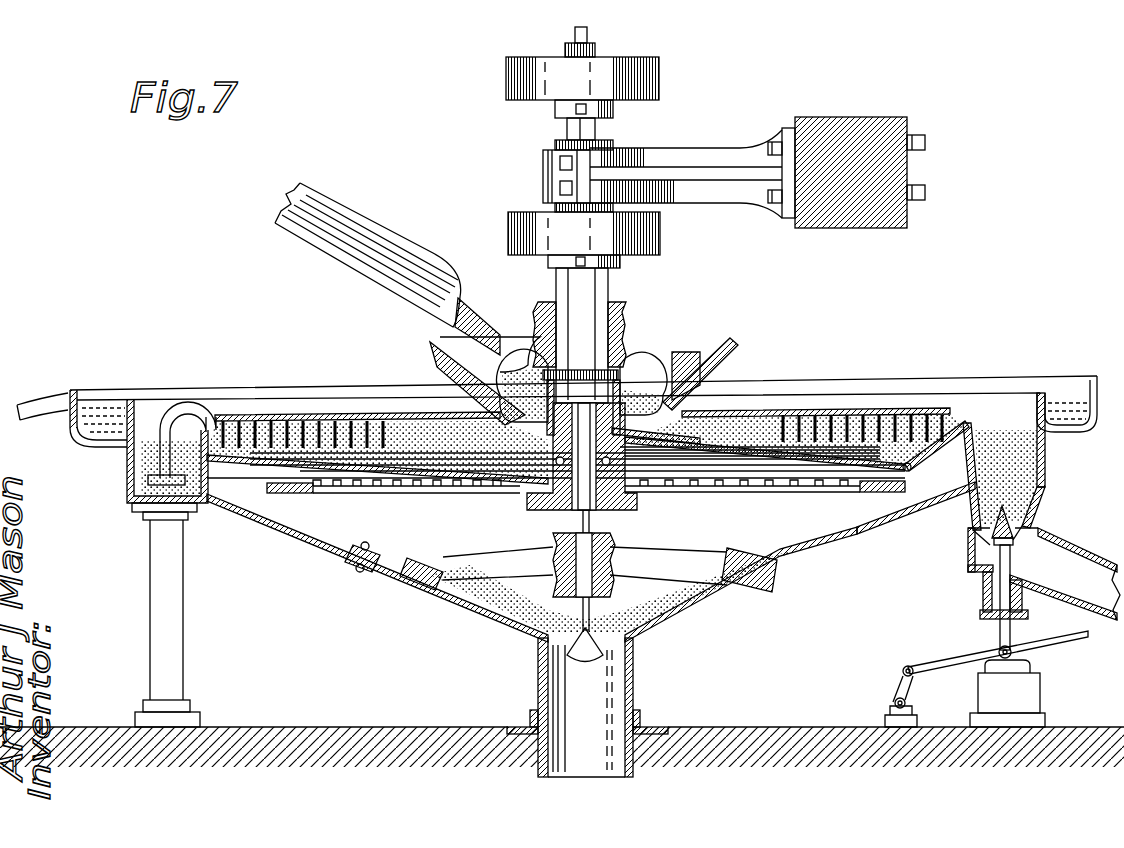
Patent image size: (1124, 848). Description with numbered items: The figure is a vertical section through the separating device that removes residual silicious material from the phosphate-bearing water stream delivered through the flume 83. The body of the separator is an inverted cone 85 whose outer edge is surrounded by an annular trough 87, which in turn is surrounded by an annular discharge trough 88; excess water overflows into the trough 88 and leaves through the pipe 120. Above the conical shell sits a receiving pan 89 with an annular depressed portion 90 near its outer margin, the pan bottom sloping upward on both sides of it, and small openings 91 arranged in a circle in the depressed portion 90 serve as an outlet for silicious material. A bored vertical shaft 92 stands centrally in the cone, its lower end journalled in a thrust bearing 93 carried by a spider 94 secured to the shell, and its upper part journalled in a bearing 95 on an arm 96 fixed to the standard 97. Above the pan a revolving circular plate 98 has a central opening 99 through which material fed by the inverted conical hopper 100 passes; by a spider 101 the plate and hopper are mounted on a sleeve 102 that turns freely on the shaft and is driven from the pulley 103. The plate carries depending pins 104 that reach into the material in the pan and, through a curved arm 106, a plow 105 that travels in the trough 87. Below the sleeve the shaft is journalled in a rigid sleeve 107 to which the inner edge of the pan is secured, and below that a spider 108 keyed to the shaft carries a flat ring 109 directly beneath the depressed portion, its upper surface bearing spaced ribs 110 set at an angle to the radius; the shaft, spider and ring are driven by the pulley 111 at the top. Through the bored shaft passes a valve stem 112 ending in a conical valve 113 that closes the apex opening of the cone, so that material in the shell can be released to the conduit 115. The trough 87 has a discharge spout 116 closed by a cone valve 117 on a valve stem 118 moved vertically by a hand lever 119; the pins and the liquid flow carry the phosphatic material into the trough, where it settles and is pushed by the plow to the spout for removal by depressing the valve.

The flume 83 is at (385, 240).
The inverted cone 85 is at (712, 598).
The annular trough 87 is at (1046, 452).
The annular discharge trough 88 is at (1068, 428).
The receiving pan 89 is at (716, 440).
The depressed portion 90 is at (907, 460).
The small openings 91 is at (887, 463).
The vertical shaft 92 is at (573, 128).
The thrust bearing 93 is at (628, 550).
The spider 94 is at (712, 557).
The bearing 95 is at (545, 174).
The arm 96 is at (682, 155).
The standard 97 is at (836, 134).
The revolving circular plate 98 is at (762, 408).
The central opening 99 is at (652, 362).
The inverted conical hopper 100 is at (447, 350).
The spider 101 is at (637, 335).
The sleeve 102 is at (550, 280).
The pulley 103 is at (637, 226).
The depending pins 104 is at (330, 420).
The plow 105 is at (160, 440).
The curved arm 106 is at (193, 402).
The rigid sleeve 107 is at (718, 352).
The spider 108 is at (337, 497).
The flat ring 109 is at (895, 520).
The spaced ribs 110 is at (463, 488).
The pulley 111 is at (515, 76).
The valve stem 112 is at (574, 36).
The conical valve 113 is at (612, 648).
The conduit 115 is at (580, 692).
The discharge spout 116 is at (1025, 533).
The cone valve 117 is at (1020, 546).
The valve stem 118 is at (1002, 558).
The hand lever 119 is at (937, 668).
The pipe 120 is at (43, 400).